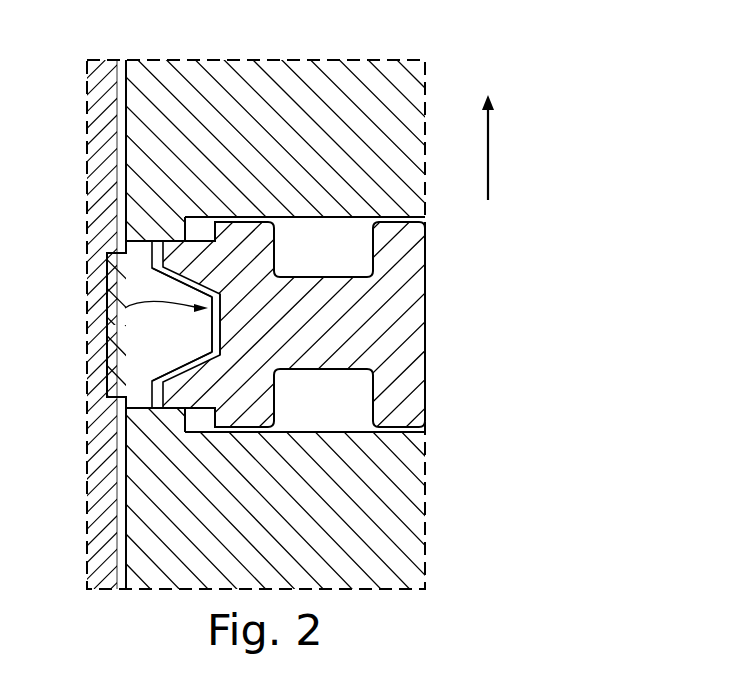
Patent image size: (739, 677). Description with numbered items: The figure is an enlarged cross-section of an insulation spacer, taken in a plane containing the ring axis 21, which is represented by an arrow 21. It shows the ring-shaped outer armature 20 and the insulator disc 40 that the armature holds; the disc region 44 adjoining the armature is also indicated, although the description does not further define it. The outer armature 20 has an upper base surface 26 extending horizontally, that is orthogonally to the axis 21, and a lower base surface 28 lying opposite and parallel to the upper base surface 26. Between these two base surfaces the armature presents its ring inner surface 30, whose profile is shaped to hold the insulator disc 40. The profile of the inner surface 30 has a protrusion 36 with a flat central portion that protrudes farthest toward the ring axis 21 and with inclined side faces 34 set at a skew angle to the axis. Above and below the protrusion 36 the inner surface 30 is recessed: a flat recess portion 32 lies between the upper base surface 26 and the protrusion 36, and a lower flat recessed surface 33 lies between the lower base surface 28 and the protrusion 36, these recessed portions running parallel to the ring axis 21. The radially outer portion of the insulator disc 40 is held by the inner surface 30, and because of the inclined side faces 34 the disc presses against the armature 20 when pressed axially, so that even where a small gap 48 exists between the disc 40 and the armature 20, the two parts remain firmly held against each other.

The outer armature 20 is at (147, 288).
The axis 21 is at (488, 156).
The upper base surface 26 is at (145, 238).
The lower base surface 28 is at (143, 412).
The ring inner surface 30 is at (125, 308).
The flat recess portion 32 is at (147, 250).
The lower flat recessed surface 33 is at (152, 384).
The inclined side faces 34 is at (157, 278).
The protrusion 36 is at (212, 335).
The insulator disc 40 is at (392, 289).
The lower housing body 44 is at (240, 409).
The gap 48 is at (218, 310).